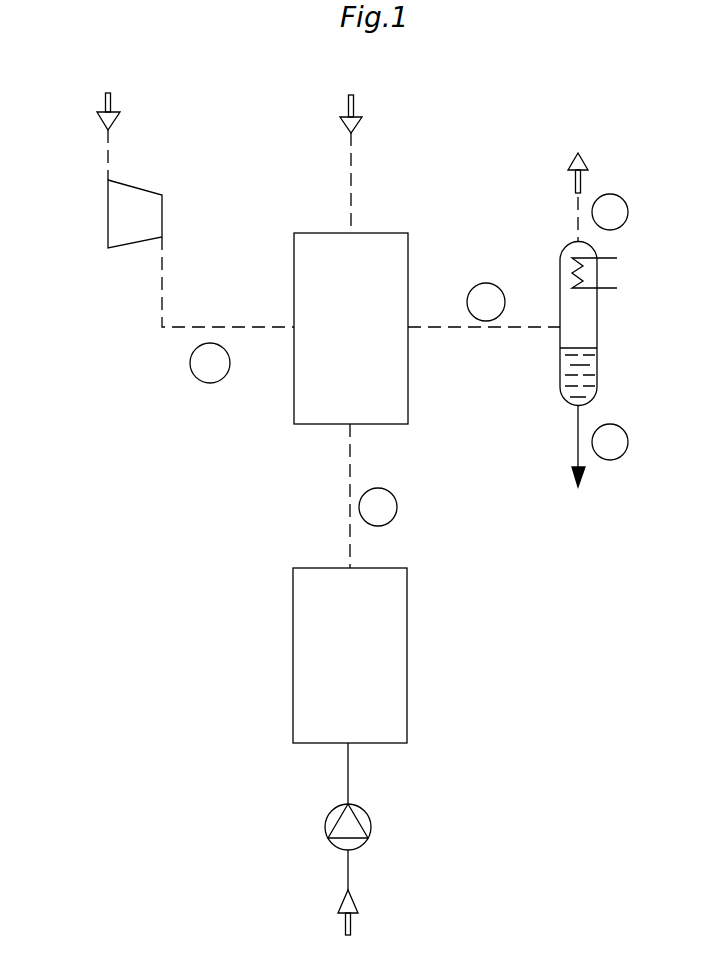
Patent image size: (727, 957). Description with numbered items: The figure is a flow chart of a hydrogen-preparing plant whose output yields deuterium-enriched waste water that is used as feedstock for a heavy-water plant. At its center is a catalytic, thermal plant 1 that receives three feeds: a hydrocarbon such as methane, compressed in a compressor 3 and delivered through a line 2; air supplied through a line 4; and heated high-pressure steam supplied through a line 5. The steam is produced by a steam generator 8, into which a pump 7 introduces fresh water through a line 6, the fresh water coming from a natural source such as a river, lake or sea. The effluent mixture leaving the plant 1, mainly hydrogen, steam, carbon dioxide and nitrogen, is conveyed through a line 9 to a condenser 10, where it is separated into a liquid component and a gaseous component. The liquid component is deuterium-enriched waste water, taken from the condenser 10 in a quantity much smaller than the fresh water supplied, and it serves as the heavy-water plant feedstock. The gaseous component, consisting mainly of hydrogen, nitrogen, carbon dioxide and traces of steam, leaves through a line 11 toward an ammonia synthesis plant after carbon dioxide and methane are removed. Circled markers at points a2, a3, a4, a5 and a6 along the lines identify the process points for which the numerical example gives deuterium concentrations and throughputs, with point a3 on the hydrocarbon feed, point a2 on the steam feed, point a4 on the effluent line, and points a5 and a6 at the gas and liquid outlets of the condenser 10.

The catalytic thermal plant 1 is at (304, 233).
The line 2 is at (161, 290).
The compressor 3 is at (108, 212).
The line 4 is at (353, 163).
The line 5 is at (353, 457).
The line 6 is at (350, 772).
The pump 7 is at (372, 820).
The steam generator 8 is at (408, 668).
The line 9 is at (442, 329).
The condenser 10 is at (598, 330).
The line 11 is at (575, 188).
The point a2 is at (350, 507).
The point a3 is at (210, 327).
The point a4 is at (486, 327).
The point a5 is at (578, 211).
The point a6 is at (578, 442).